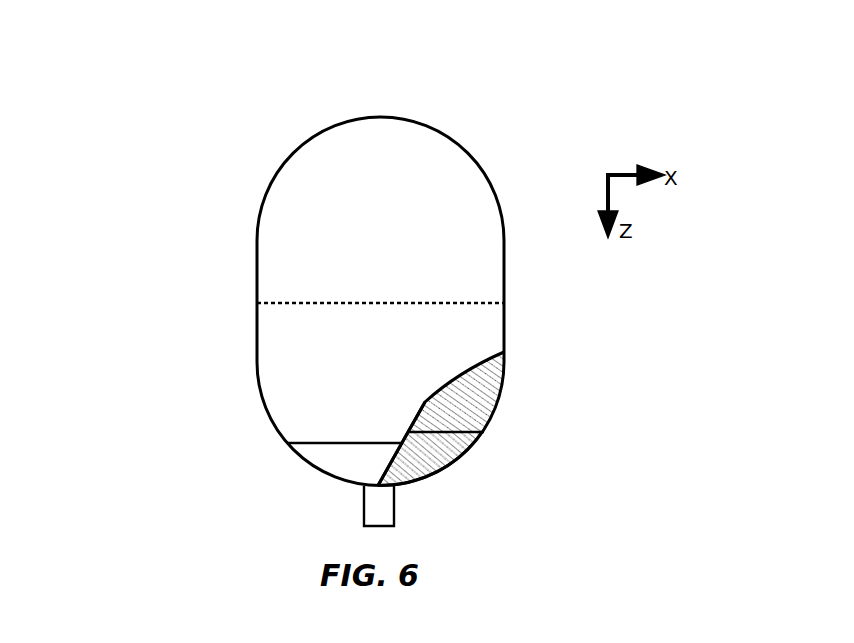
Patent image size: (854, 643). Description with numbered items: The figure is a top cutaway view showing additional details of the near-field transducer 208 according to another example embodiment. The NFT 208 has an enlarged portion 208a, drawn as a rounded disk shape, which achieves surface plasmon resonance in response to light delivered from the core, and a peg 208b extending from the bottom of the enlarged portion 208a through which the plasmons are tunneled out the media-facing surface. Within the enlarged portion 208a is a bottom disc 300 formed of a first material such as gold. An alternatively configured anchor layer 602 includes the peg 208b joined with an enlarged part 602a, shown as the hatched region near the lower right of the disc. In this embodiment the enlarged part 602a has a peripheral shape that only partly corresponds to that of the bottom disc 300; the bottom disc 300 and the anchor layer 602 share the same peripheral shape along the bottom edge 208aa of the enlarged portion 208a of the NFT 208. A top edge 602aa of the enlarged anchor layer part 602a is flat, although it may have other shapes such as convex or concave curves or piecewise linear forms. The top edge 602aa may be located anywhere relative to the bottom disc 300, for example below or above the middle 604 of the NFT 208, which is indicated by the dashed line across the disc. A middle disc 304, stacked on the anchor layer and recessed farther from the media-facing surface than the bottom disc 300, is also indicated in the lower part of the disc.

The near-field transducer 208 is at (313, 298).
The enlarged portion 208a is at (192, 487).
The bottom edge 208aa is at (420, 482).
The peg 208b is at (375, 508).
The middle 604 is at (466, 303).
The bottom disc 300 is at (491, 378).
The anchor layer 602 is at (431, 468).
The enlarged part 602a is at (447, 443).
The top edge 602aa is at (466, 431).
The middle disc 304 is at (334, 462).